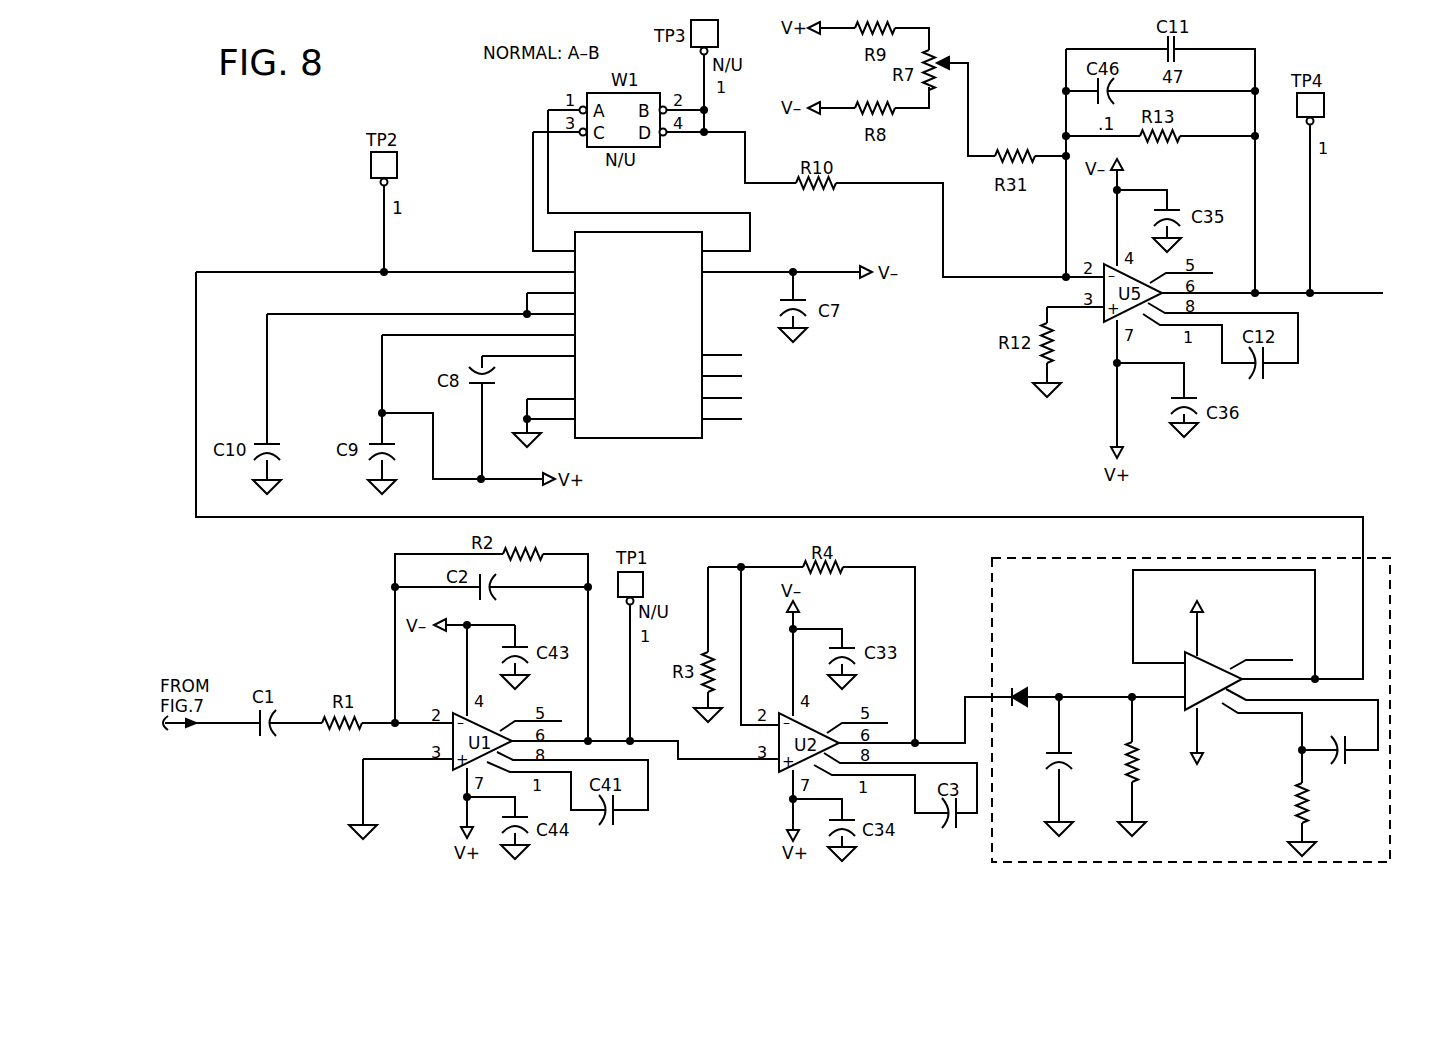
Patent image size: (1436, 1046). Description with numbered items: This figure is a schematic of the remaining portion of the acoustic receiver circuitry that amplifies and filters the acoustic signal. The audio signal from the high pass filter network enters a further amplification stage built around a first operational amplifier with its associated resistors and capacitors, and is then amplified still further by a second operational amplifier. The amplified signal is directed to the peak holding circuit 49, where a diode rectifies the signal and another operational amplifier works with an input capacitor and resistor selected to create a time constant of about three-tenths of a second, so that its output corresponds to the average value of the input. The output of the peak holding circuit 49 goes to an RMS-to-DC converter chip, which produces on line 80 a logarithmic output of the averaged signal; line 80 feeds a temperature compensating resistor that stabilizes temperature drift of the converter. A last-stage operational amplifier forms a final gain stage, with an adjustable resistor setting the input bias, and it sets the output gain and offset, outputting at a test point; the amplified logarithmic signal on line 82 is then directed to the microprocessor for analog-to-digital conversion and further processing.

The line 80 is at (657, 213).
The line 82 is at (1342, 293).
The peak holding circuit 49 is at (1213, 558).